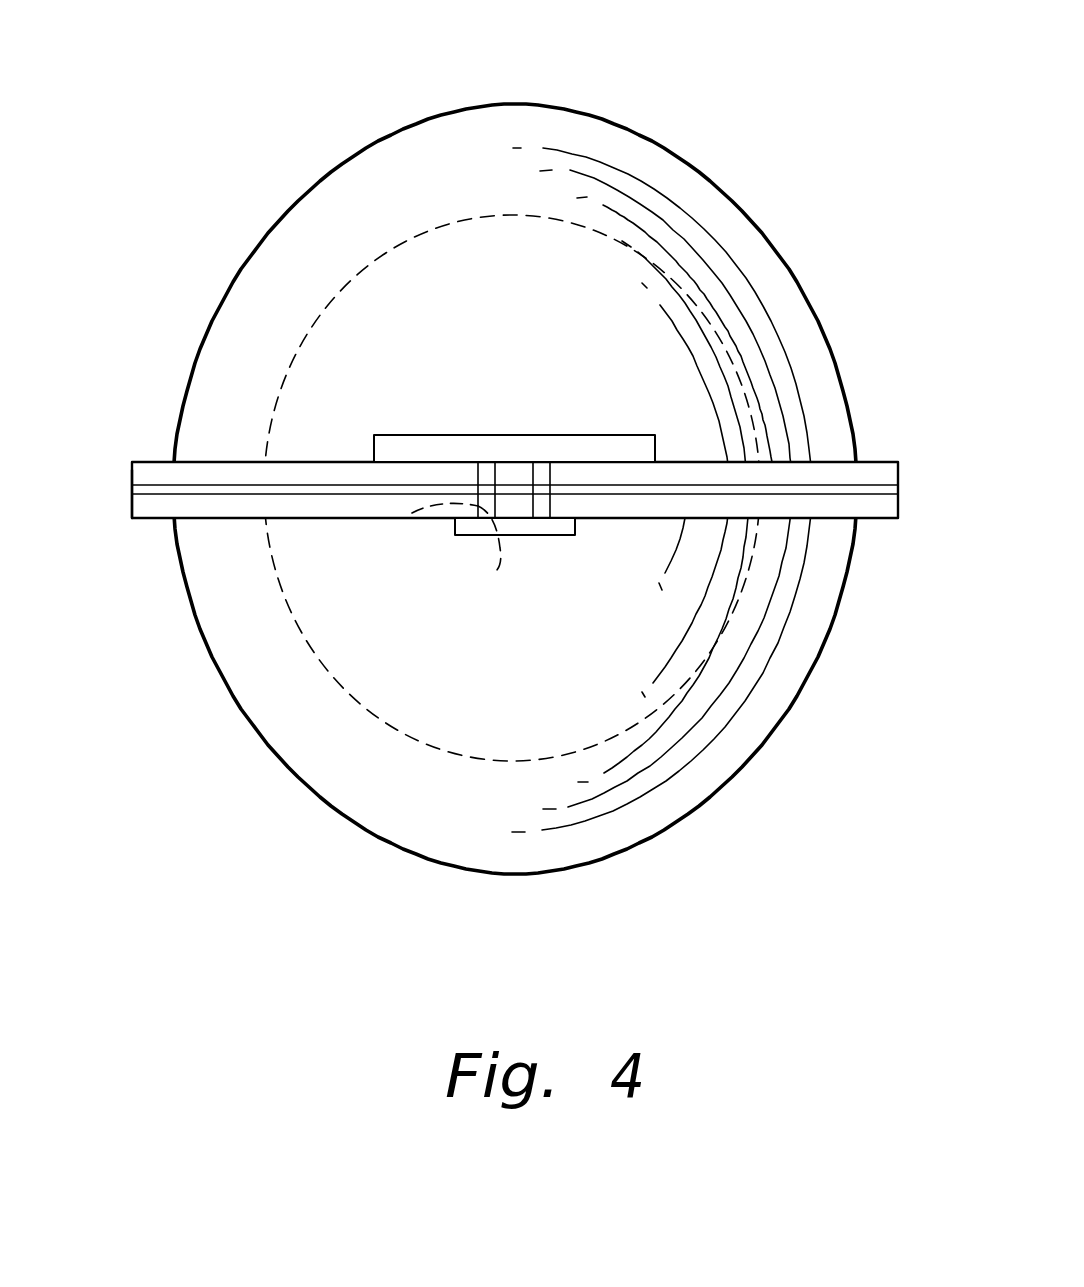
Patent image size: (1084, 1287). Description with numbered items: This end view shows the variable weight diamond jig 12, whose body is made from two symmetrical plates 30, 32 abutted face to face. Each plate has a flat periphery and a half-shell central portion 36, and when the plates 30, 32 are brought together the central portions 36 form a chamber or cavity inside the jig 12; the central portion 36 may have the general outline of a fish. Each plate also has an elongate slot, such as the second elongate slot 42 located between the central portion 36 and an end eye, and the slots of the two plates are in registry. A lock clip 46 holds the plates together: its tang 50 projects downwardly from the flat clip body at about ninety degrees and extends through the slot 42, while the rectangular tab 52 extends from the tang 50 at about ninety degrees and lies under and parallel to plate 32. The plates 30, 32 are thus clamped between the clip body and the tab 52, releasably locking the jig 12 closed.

The jig body 12 is at (334, 100).
The plate 30 is at (859, 462).
The plate 32 is at (157, 520).
The half-shell central portion 36 is at (562, 108).
The second elongate slot 42 is at (412, 513).
The lock clip 46 is at (541, 435).
The tang 50 is at (482, 575).
The tab 52 is at (533, 535).